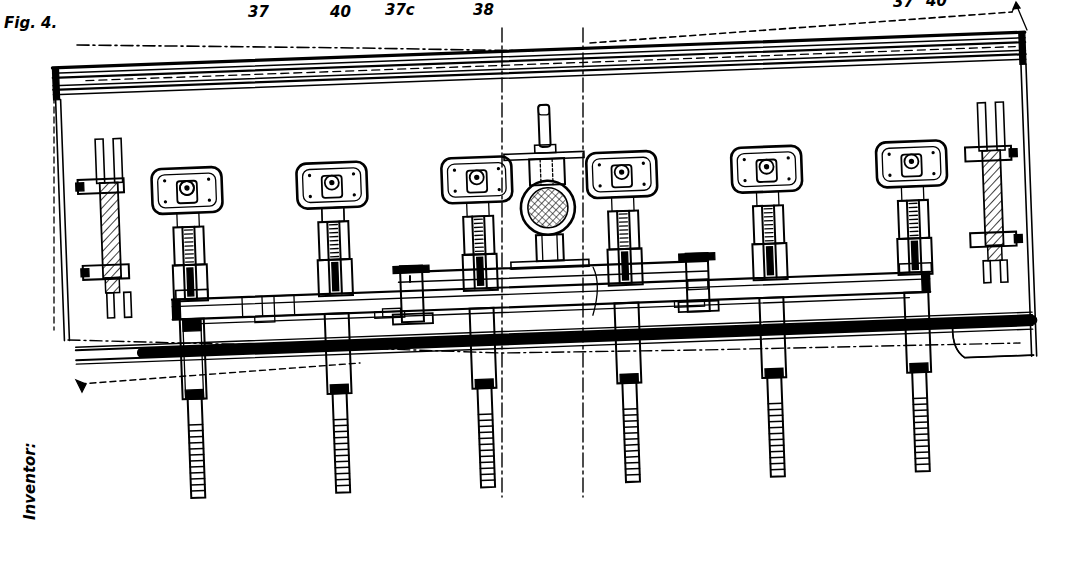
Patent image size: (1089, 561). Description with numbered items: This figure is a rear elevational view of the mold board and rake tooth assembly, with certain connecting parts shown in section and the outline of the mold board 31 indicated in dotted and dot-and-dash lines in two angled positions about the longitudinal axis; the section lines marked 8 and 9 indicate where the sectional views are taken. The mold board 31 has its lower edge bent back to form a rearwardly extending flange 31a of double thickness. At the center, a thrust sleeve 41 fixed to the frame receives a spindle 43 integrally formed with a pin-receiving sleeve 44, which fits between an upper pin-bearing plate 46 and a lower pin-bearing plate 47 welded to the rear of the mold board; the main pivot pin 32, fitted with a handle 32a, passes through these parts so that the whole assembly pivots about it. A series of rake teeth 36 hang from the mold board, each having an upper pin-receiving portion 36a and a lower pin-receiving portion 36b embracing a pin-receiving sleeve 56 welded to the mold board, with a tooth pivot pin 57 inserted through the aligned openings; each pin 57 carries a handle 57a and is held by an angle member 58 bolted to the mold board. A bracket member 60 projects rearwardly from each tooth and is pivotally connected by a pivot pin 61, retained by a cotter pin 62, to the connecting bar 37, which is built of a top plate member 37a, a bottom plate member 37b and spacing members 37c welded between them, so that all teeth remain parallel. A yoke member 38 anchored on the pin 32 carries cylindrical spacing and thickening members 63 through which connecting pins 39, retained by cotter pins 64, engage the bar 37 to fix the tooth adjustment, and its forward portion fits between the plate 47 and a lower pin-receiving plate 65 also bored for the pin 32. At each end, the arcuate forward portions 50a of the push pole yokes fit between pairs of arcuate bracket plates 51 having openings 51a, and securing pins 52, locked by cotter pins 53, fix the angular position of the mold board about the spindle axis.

The section line 8 is at (598, 490).
The section line 9 is at (516, 492).
The mold board 31 is at (58, 40).
The rearwardly extending flange 31a is at (975, 345).
The pin 32 is at (540, 172).
The handle 32a is at (553, 122).
The rake teeth 36 is at (912, 435).
The upper pin-receiving portion 36a is at (350, 216).
The lower pin-receiving portion 36b is at (385, 320).
The connecting bar 37 is at (248, 298).
The top plate member 37a is at (281, 300).
The bottom plate member 37b is at (258, 324).
The spacing members 37c is at (688, 332).
The yoke member 38 is at (442, 276).
The connecting pins 39 is at (690, 268).
The thrust sleeve 41 is at (528, 198).
The spindle 43 is at (585, 156).
The pin-receiving sleeve 44 is at (526, 258).
The pin-bearing plate 46 is at (562, 162).
The pin-bearing plate 47 is at (577, 263).
The forward portions of yoke members 50a is at (1003, 190).
The bracket plates 51 is at (98, 215).
The openings 51a is at (1000, 168).
The securing pins 52 is at (968, 238).
The cotter pins 53 is at (80, 268).
The pin-receiving sleeve 56 is at (641, 256).
The tooth pivot pin 57 is at (198, 438).
The handle 57a is at (877, 155).
The angle member 58 is at (204, 200).
The bracket member 60 is at (880, 283).
The pivot pins 61 is at (900, 271).
The cotter pins 62 is at (180, 323).
The spacing and thickening members 63 is at (712, 276).
The cotter pins 64 is at (707, 305).
The pin-receiving plate 65 is at (588, 290).